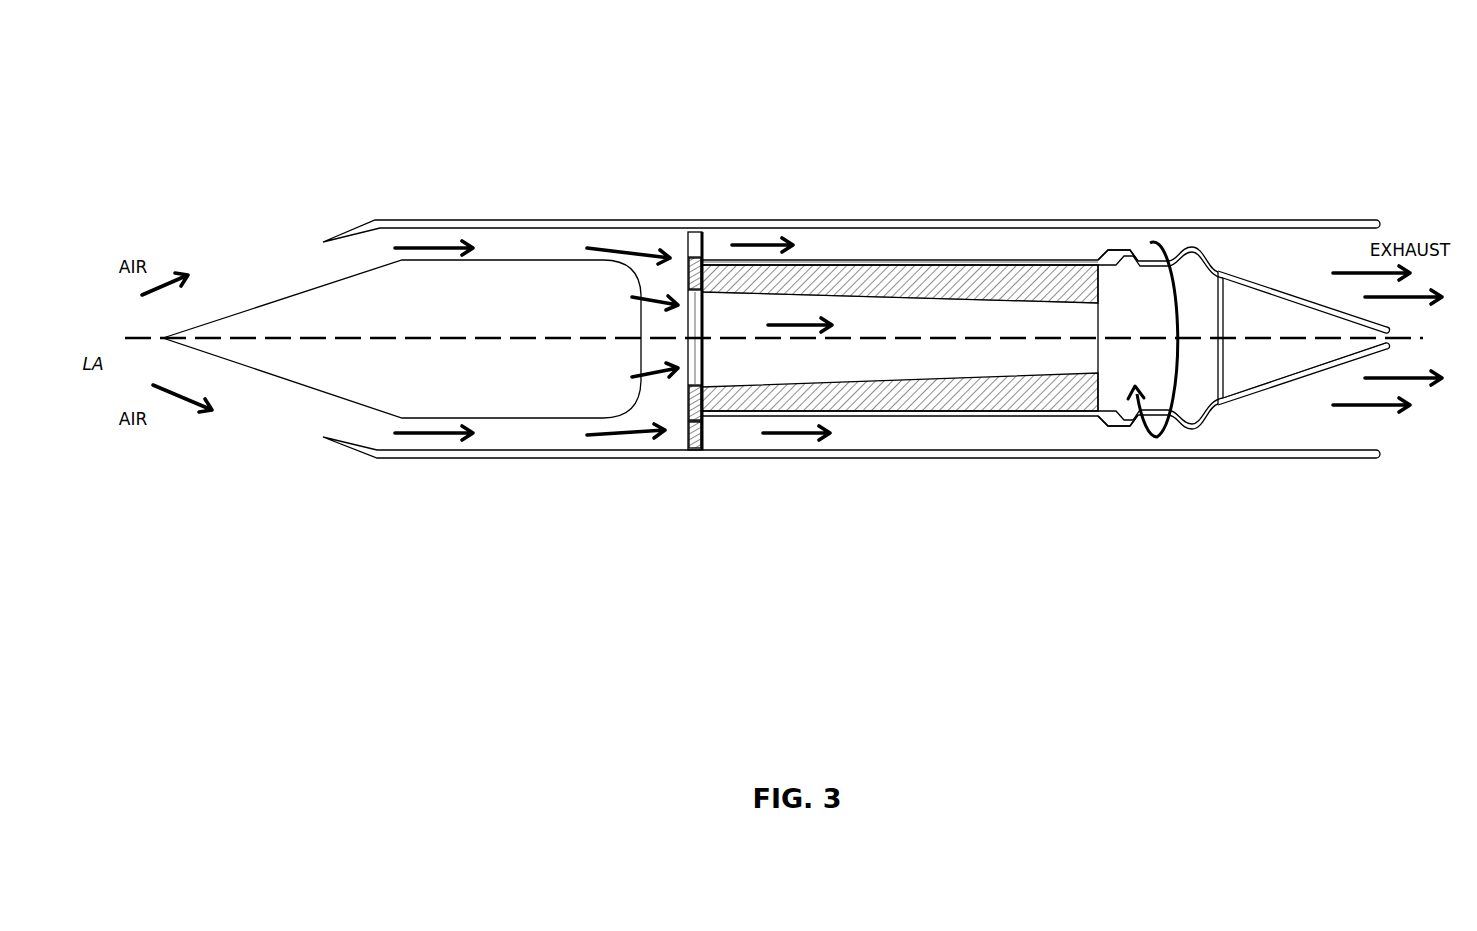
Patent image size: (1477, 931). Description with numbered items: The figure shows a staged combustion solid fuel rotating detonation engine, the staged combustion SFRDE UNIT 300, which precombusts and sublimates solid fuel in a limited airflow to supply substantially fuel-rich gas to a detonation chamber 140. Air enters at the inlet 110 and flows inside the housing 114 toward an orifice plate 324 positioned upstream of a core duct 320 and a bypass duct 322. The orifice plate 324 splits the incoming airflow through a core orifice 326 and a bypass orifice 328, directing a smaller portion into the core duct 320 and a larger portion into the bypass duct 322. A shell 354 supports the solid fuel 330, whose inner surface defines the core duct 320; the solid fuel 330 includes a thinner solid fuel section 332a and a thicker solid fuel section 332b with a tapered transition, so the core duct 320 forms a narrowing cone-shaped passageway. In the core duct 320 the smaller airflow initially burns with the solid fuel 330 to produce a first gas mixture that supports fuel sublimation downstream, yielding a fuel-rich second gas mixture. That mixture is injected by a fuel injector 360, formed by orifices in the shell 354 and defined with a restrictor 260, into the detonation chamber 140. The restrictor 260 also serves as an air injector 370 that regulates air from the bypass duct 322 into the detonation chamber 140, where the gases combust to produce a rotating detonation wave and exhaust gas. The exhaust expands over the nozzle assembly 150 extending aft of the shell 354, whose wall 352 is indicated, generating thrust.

The staged combustion SFRDE UNIT 300 is at (772, 612).
The inlet 110 is at (305, 270).
The housing 114 is at (433, 220).
The bypass duct 322 is at (1000, 247).
The shell 354 is at (872, 260).
The air injector 370 is at (1119, 238).
The restrictor 260 is at (1119, 430).
The orifice plate 324 is at (688, 262).
The bypass orifice 328 is at (707, 243).
The core orifice 326 is at (707, 352).
The solid fuel 330 is at (810, 280).
The solid fuel section 332a is at (820, 397).
The solid fuel section 332b is at (1055, 397).
The core duct 320 is at (890, 325).
The fuel injector 360 is at (1133, 417).
The detonation chamber 140 is at (1168, 245).
The nozzle assembly 150 is at (1267, 245).
The nozzle wall 352 is at (1298, 377).